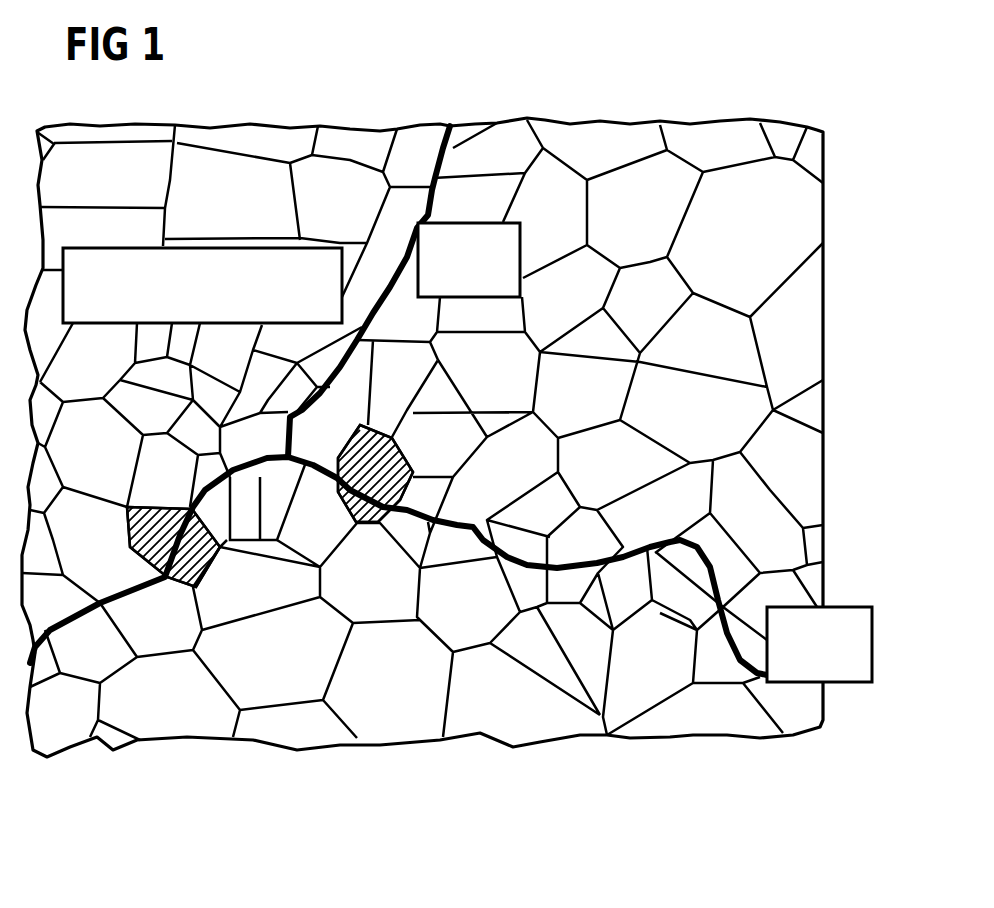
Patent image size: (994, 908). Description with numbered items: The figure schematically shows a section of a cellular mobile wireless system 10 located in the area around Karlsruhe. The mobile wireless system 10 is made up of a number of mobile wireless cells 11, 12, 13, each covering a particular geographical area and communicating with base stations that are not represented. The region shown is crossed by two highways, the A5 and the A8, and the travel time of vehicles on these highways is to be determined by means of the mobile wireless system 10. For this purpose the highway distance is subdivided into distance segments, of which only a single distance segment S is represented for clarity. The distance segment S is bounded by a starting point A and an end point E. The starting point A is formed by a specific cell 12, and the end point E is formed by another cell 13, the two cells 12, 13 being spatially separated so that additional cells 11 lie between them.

The cellular mobile wireless system 10 is at (447, 496).
The mobile wireless cells 11 is at (90, 192).
The cell forming the starting point 12 is at (187, 589).
The cell forming the end point 13 is at (384, 422).
The starting point A is at (121, 542).
The end point E is at (390, 458).
The distance segment S is at (238, 486).